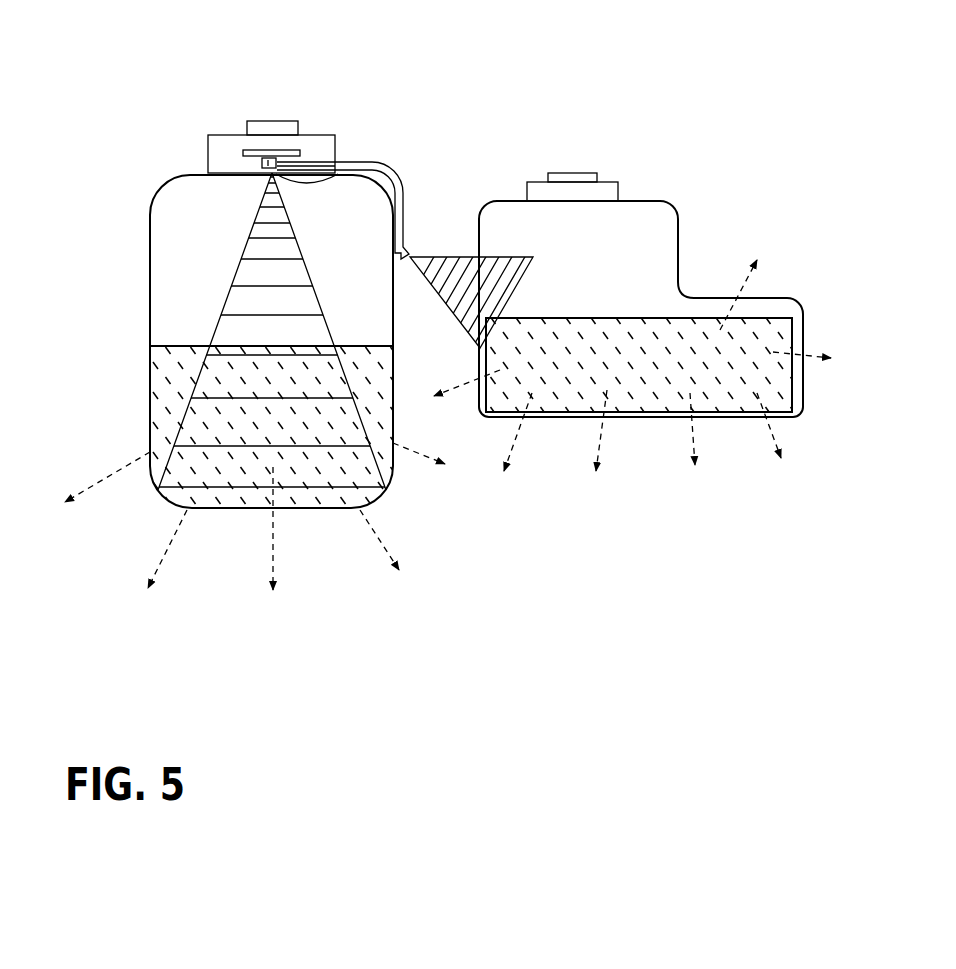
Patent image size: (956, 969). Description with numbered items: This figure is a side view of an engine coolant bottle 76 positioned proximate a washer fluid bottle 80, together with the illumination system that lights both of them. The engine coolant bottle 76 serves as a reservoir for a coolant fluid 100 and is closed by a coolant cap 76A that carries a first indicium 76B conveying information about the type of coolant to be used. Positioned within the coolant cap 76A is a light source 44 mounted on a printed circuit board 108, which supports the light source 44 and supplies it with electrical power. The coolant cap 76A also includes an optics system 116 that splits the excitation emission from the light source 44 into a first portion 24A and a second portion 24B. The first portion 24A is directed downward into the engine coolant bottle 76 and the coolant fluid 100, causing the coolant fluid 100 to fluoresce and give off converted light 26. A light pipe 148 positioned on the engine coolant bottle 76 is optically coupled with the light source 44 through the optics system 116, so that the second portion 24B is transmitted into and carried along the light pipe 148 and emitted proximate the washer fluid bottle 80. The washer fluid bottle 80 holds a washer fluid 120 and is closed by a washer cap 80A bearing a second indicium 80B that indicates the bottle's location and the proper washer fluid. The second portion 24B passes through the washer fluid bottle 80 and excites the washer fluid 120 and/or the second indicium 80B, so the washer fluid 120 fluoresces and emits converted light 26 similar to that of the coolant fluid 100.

The engine coolant bottle 76 is at (121, 222).
The coolant cap 76A is at (233, 140).
The first indicium 76B is at (260, 125).
The printed circuit board 108 is at (293, 153).
The light source 44 is at (276, 164).
The optics system 116 is at (250, 165).
The light pipe 148 is at (393, 178).
The first portion of the excitation emission 24A is at (240, 250).
The second portion of the excitation emission 24B is at (443, 251).
The coolant fluid 100 is at (171, 370).
The washer fluid bottle 80 is at (699, 225).
The washer cap 80A is at (600, 193).
The second indicium 80B is at (577, 178).
The washer fluid 120 is at (747, 343).
The converted light 26 is at (273, 545).